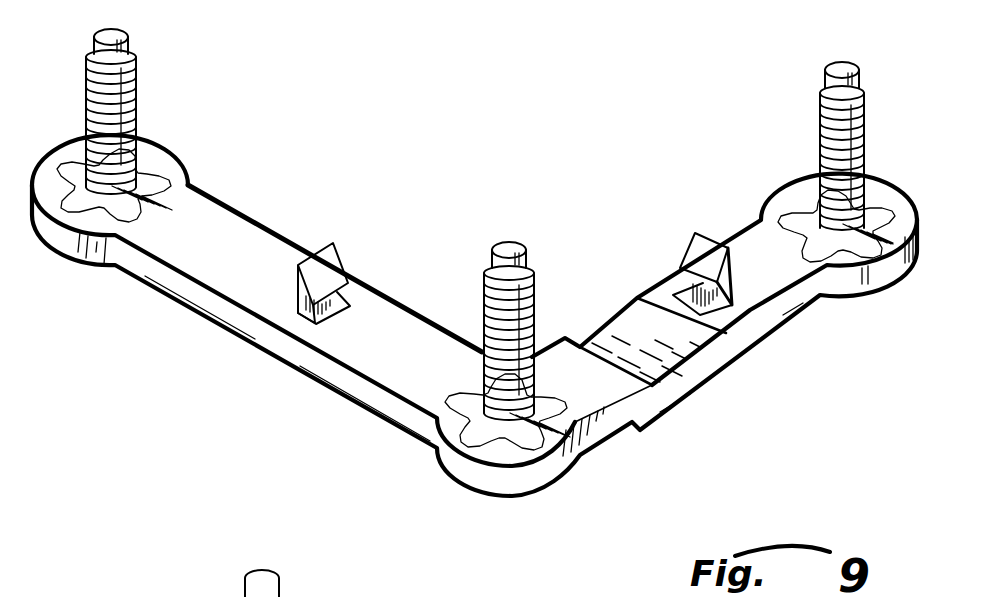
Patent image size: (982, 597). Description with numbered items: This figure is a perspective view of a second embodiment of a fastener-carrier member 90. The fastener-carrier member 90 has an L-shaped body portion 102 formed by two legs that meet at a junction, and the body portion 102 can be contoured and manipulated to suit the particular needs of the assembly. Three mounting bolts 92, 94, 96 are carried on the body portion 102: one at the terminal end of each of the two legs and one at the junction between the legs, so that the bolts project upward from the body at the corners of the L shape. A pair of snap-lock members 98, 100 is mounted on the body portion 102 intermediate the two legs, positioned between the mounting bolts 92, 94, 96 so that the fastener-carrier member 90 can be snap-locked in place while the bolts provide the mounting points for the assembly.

The fastener-carrier member 90 is at (304, 432).
The mounting bolt 92 is at (137, 48).
The mounting bolt 94 is at (527, 260).
The mounting bolt 96 is at (845, 64).
The snap-lock member 98 is at (322, 250).
The snap-lock member 100 is at (707, 233).
The body portion 102 is at (394, 430).